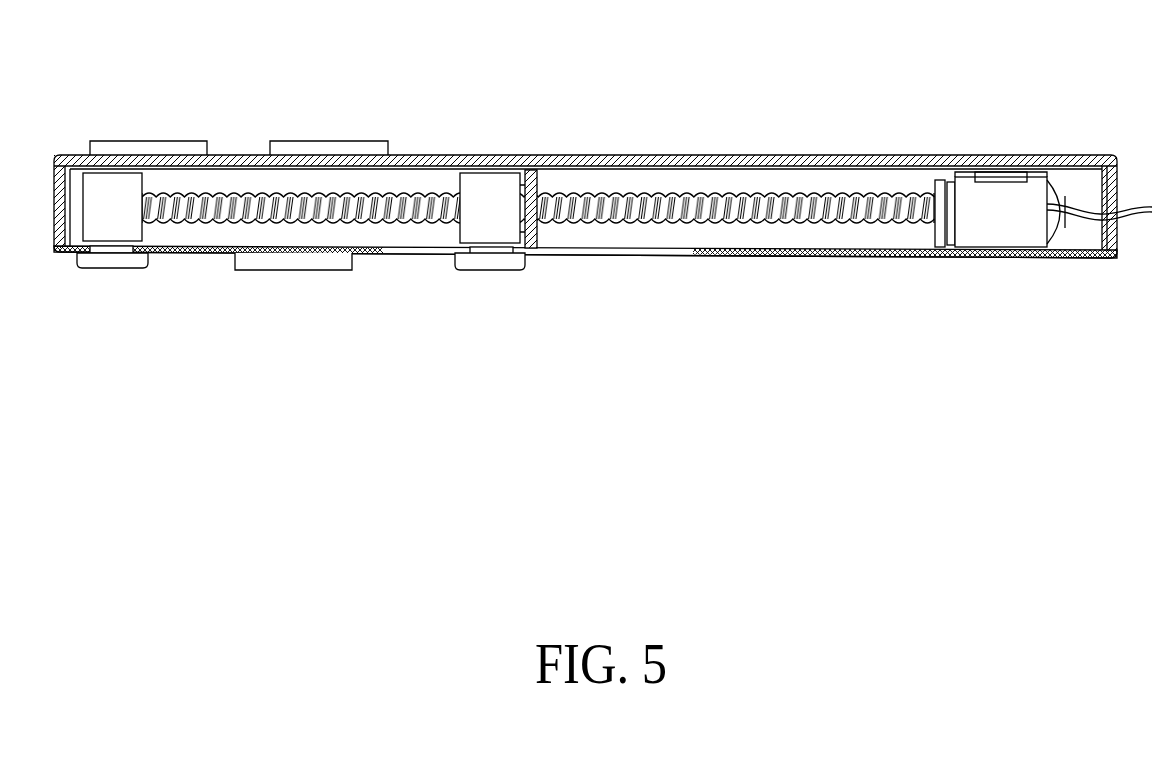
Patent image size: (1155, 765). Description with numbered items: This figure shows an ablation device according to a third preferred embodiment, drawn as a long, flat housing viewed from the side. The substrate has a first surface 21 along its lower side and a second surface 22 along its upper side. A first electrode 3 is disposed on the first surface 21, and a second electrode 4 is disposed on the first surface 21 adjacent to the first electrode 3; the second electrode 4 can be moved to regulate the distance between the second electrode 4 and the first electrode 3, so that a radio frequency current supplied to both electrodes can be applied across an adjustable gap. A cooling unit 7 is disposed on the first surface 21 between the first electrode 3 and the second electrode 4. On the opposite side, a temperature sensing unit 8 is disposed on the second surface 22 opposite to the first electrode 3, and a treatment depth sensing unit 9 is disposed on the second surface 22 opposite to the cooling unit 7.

The first electrode 3 is at (111, 269).
The second electrode 4 is at (489, 271).
The cooling unit 7 is at (292, 271).
The temperature sensing unit 8 is at (150, 141).
The treatment depth sensing unit 9 is at (331, 141).
The first surface 21 is at (926, 259).
The second surface 22 is at (688, 157).